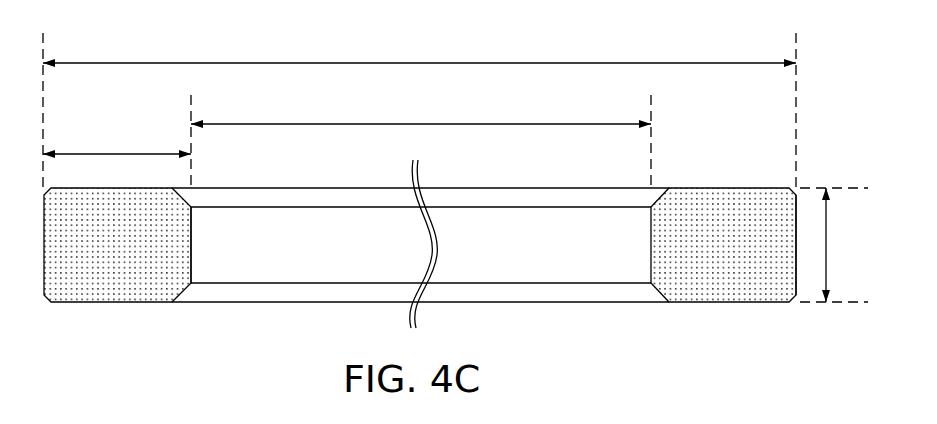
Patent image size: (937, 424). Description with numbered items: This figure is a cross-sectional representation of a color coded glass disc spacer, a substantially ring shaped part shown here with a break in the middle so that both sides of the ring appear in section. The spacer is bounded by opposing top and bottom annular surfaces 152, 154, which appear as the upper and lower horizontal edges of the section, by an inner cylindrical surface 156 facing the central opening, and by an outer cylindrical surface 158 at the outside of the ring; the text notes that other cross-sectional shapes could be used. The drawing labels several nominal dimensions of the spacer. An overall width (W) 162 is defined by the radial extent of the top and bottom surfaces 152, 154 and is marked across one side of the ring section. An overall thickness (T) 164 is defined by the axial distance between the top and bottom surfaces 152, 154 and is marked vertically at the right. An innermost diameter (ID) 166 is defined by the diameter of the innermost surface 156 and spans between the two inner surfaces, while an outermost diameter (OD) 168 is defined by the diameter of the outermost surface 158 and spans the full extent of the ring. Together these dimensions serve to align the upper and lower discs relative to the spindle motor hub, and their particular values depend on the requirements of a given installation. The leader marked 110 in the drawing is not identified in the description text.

The seal ring 110 is at (190, 20).
The top annular surface 152 is at (733, 187).
The bottom annular surface 154 is at (110, 303).
The inner cylindrical surface 156 is at (192, 247).
The outer cylindrical surface 158 is at (797, 264).
The overall width (W) 162 is at (88, 152).
The overall thickness (T) 164 is at (826, 225).
The innermost diameter (ID) 166 is at (563, 124).
The outermost diameter (OD) 168 is at (563, 63).